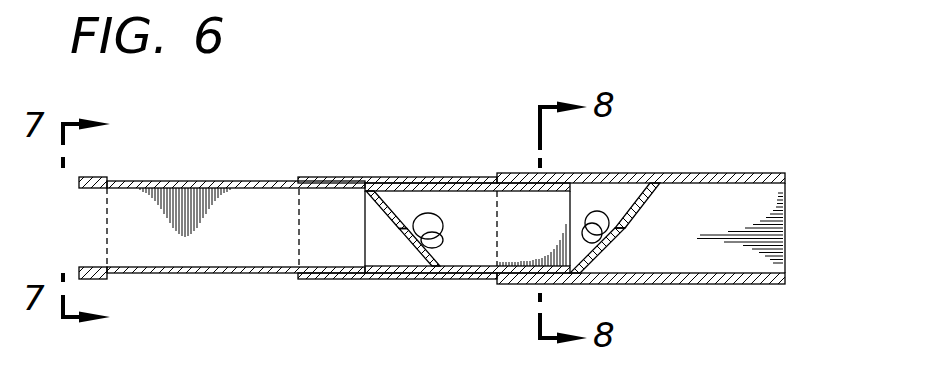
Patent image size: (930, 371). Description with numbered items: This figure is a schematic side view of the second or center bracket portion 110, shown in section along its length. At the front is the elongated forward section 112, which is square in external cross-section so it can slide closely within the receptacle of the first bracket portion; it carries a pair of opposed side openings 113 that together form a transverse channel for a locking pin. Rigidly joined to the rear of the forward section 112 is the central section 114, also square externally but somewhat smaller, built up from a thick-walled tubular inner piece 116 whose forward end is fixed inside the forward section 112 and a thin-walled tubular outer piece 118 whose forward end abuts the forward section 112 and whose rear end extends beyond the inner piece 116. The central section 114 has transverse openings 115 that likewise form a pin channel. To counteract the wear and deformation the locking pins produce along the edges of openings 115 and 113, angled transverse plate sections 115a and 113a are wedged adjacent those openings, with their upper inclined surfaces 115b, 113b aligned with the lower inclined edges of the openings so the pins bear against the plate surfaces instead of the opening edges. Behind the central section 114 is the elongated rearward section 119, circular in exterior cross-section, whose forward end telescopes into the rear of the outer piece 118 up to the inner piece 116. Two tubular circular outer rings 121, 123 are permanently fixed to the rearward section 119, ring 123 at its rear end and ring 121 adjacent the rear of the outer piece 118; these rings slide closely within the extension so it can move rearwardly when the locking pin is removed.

The second bracket portion 110 is at (646, 211).
The forward section 112 is at (750, 165).
The side openings 113 is at (646, 211).
The angled transverse plate section 113a is at (632, 222).
The upper inclined surface 113b is at (640, 192).
The central section 114 is at (451, 215).
The openings 115 is at (421, 226).
The angled transverse plate section 115a is at (398, 211).
The upper inclined surface 115b is at (397, 217).
The tubular inner piece 116 is at (460, 193).
The tubular outer piece 118 is at (372, 181).
The rearward section 119 is at (228, 182).
The outer ring 121 is at (313, 177).
The outer ring 123 is at (85, 179).